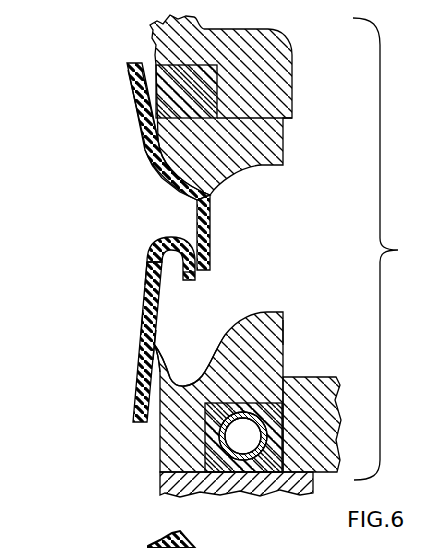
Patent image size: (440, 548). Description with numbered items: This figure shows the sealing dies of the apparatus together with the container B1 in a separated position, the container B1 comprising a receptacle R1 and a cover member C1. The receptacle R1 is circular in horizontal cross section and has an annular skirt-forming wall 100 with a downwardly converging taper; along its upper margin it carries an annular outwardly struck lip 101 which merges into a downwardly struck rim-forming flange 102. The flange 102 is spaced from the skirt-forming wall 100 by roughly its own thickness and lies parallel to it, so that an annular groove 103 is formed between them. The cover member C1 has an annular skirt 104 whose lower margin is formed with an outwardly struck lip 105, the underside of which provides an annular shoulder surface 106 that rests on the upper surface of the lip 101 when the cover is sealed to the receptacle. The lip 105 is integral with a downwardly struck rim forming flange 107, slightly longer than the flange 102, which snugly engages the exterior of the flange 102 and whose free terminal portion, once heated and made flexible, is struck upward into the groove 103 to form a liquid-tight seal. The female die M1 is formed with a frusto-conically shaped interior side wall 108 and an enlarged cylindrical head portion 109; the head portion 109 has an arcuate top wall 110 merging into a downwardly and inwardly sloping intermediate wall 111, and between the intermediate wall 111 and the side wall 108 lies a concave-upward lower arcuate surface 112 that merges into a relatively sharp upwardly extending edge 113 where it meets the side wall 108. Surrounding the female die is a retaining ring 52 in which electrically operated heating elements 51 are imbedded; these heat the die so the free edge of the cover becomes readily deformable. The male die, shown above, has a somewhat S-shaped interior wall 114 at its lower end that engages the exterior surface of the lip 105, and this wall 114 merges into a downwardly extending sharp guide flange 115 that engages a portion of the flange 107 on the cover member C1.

The annular skirt 104 is at (127, 63).
The cover member C1 is at (135, 86).
The container B1 is at (140, 113).
The S-shaped interior wall 114 is at (150, 165).
The outwardly struck lip 105 is at (157, 182).
The shoulder surface 106 is at (176, 192).
The guide flange 115 is at (192, 205).
The rim forming flange 107 is at (211, 226).
The outwardly struck lip 101 is at (163, 237).
The annular groove 103 is at (146, 275).
The skirt-forming wall 100 is at (143, 298).
The receptacle R1 is at (141, 321).
The sharp edge 113 is at (143, 340).
The lower arcuate surface 112 is at (158, 374).
The rim-forming flange 102 is at (192, 284).
The intermediate wall 111 is at (217, 336).
The arcuate top wall 110 is at (266, 312).
The female die M1 is at (286, 331).
The cylindrical head portion 109 is at (284, 355).
The frusto-conically shaped interior side wall 108 is at (160, 455).
The retaining ring 52 is at (233, 462).
The heating elements 51 is at (255, 450).